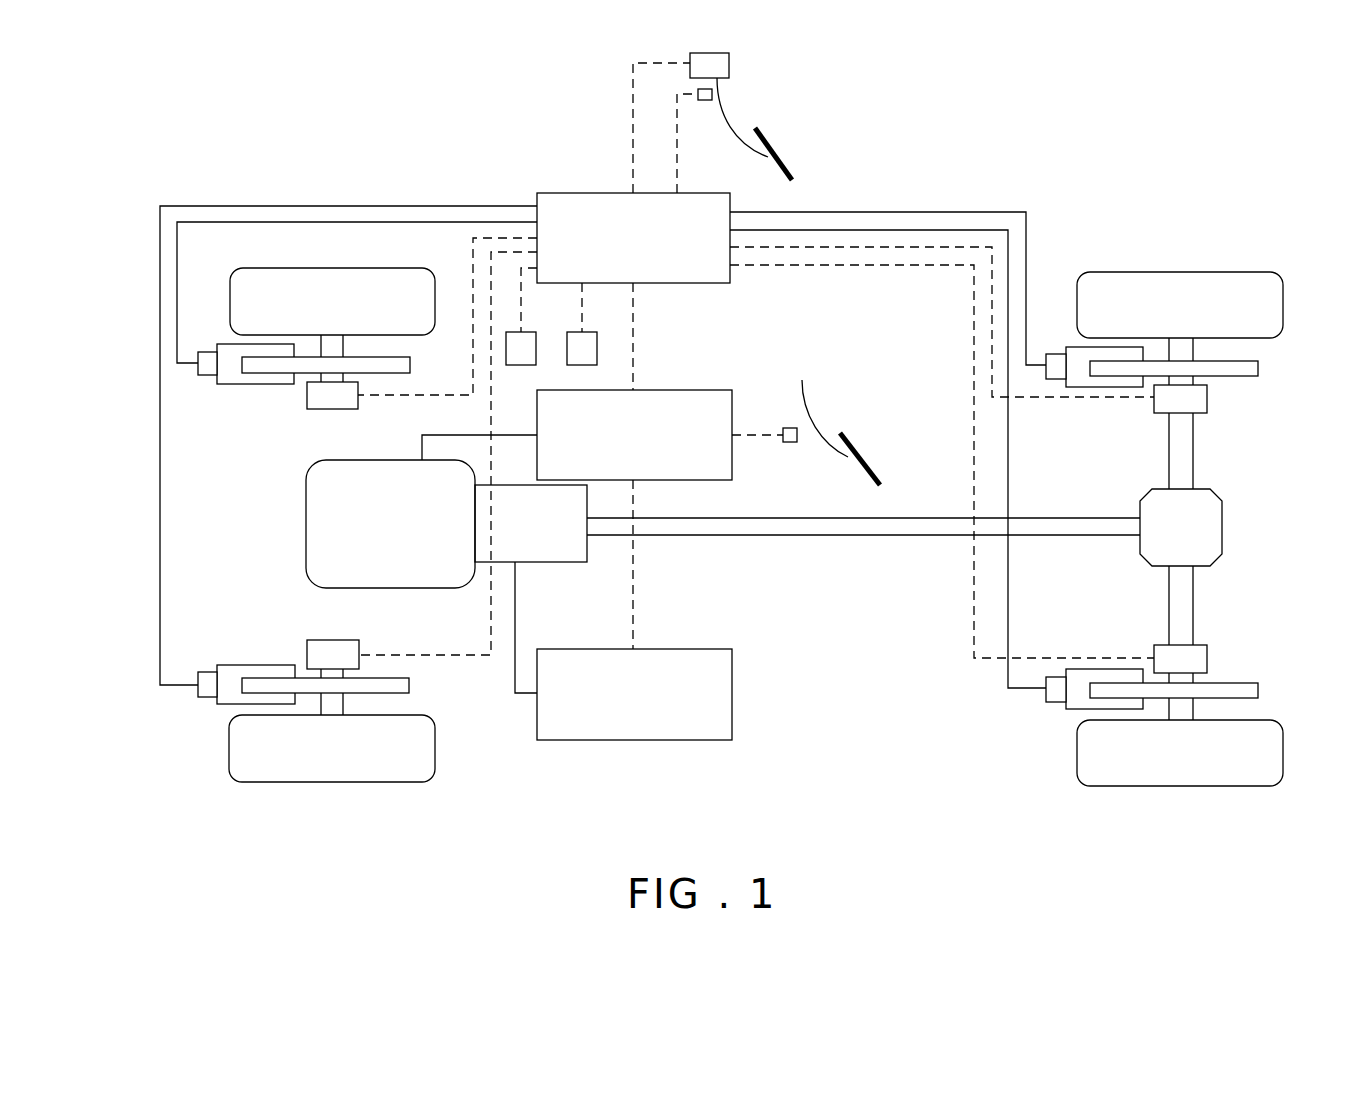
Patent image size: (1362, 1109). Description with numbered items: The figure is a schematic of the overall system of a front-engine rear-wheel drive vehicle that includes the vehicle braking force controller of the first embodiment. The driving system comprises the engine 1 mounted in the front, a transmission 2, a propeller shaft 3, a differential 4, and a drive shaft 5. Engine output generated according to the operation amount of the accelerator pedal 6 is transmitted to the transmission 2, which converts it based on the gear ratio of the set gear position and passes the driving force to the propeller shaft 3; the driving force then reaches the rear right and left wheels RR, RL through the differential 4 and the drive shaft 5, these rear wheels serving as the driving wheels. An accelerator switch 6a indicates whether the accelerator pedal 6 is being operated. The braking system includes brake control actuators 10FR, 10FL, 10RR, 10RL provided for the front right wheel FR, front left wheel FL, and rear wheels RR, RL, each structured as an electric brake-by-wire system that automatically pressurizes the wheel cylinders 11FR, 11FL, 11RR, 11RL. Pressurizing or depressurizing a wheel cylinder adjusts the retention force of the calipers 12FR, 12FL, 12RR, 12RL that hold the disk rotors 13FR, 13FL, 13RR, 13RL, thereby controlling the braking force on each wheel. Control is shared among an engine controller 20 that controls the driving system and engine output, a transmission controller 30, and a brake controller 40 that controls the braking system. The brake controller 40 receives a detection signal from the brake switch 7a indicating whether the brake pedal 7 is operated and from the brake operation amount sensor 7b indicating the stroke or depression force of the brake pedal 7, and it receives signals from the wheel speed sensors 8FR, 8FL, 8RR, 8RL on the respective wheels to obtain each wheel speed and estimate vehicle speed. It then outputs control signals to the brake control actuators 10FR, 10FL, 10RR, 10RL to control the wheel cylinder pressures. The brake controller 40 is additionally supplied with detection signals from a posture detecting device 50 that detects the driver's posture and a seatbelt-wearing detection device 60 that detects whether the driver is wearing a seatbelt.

The engine 1 is at (330, 522).
The transmission 2 is at (567, 562).
The propeller shaft 3 is at (893, 535).
The differential 4 is at (1222, 537).
The drive shaft 5 is at (1193, 482).
The accelerator pedal 6 is at (850, 438).
The accelerator switch 6a is at (790, 442).
The brake pedal 7 is at (765, 133).
The brake switch 7a is at (729, 65).
The brake operation amount sensor 7b is at (705, 100).
The engine controller 20 is at (678, 390).
The transmission controller 30 is at (732, 710).
The brake controller 40 is at (577, 193).
The posture detecting device 50 is at (530, 332).
The seatbelt-wearing detection device 60 is at (590, 332).
The wheel speed sensor 8FR is at (337, 395).
The wheel speed sensor 8FL is at (337, 655).
The wheel speed sensor 8RR is at (1200, 397).
The wheel speed sensor 8RL is at (1200, 660).
The brake control actuator 10FR is at (327, 359).
The brake control actuator 10FL is at (350, 690).
The brake control actuator 10RR is at (1176, 362).
The brake control actuator 10RL is at (1173, 693).
The wheel cylinder 11FR is at (205, 375).
The wheel cylinder 11FL is at (205, 672).
The wheel cylinder 11RR is at (1053, 379).
The wheel cylinder 11RL is at (1055, 677).
The caliper 12FR is at (255, 384).
The caliper 12FL is at (255, 665).
The caliper 12RR is at (1100, 387).
The caliper 12RL is at (1105, 669).
The disk rotor 13FR is at (410, 365).
The disk rotor 13FL is at (409, 685).
The disk rotor 13RR is at (1258, 368).
The disk rotor 13RL is at (1258, 690).
The front right wheel FR is at (340, 268).
The front left wheel FL is at (340, 782).
The rear right wheel RR is at (1187, 272).
The rear left wheel RL is at (1190, 786).